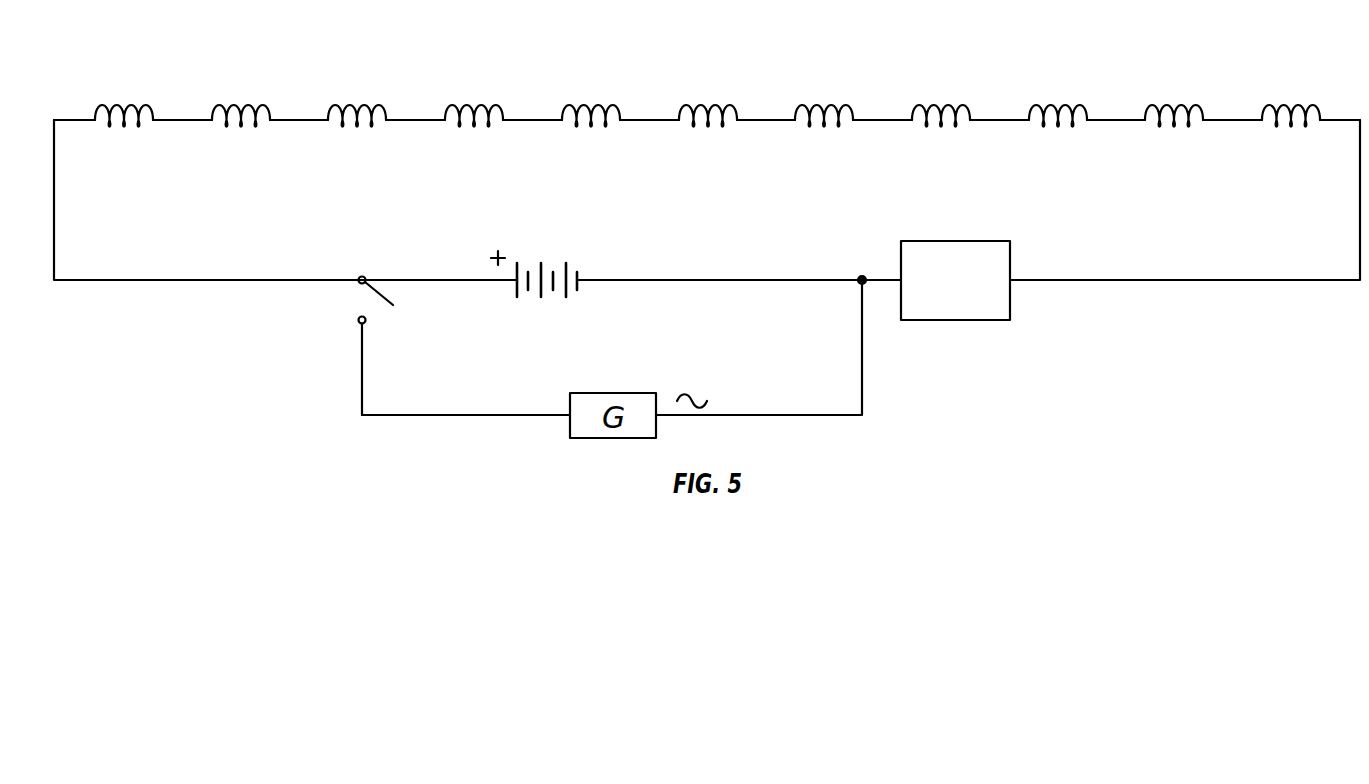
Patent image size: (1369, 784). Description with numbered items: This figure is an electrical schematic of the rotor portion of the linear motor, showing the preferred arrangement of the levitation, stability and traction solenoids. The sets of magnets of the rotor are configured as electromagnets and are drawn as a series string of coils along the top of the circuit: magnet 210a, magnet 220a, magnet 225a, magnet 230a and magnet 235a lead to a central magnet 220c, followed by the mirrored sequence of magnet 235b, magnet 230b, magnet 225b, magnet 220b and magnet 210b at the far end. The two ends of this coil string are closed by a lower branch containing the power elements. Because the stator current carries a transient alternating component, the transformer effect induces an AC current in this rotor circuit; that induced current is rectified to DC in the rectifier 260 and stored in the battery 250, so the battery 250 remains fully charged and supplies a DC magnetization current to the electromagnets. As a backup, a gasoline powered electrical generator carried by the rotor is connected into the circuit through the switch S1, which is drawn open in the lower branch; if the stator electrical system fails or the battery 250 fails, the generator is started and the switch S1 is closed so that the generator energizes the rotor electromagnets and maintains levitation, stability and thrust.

The magnet 210a is at (131, 104).
The magnet 220a is at (248, 104).
The magnet 225a is at (364, 104).
The magnet 230a is at (481, 104).
The magnet 235a is at (598, 104).
The magnet 220c is at (715, 104).
The magnet 235b is at (831, 104).
The magnet 230b is at (948, 104).
The magnet 225b is at (1065, 104).
The magnet 220b is at (1181, 104).
The magnet 210b is at (1298, 104).
The battery 250 is at (517, 288).
The rectifier 260 is at (953, 320).
The switch S1 is at (371, 327).